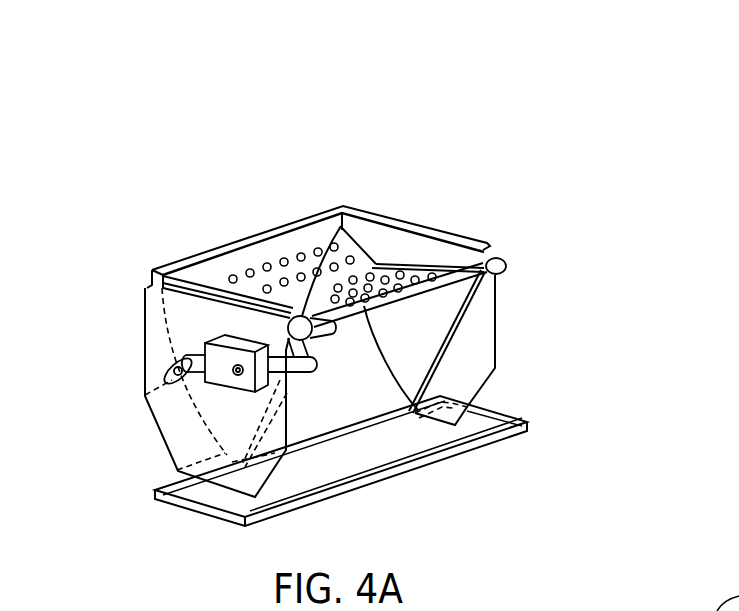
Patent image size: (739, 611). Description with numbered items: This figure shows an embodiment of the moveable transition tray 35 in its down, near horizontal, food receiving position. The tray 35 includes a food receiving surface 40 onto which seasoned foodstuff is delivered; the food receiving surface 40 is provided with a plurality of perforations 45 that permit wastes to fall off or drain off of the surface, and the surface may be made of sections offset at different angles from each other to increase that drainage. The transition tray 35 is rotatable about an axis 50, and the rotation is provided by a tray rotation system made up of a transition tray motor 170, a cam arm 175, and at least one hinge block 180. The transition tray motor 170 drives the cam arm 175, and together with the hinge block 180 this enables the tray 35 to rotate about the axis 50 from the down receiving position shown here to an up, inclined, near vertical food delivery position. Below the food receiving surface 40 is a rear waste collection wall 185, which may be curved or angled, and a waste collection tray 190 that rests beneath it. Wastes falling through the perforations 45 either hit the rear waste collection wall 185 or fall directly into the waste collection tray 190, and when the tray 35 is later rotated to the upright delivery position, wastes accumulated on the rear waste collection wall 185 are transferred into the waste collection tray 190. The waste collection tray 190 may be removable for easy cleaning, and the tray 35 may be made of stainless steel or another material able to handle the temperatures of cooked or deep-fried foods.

The moveable transition tray 35 is at (232, 90).
The food receiving surface 40 is at (363, 260).
The perforations 45 is at (333, 243).
The axis 50 is at (372, 297).
The transition tray motor 170 is at (198, 355).
The cam arm 175 is at (312, 370).
The hinge block 180 is at (502, 267).
The rear waste collection wall 185 is at (362, 378).
The waste collection tray 190 is at (490, 423).